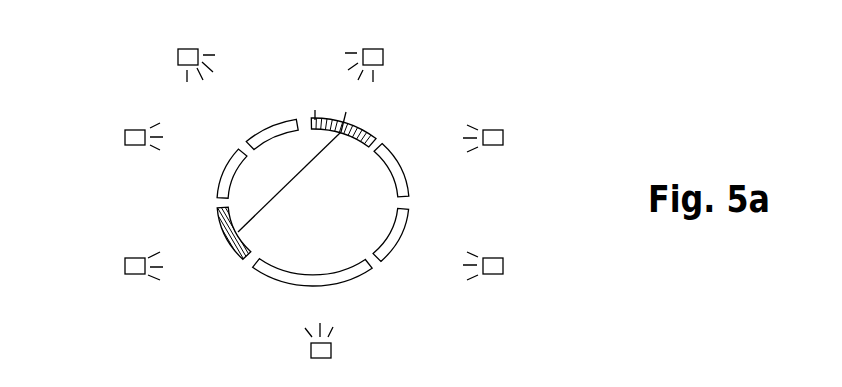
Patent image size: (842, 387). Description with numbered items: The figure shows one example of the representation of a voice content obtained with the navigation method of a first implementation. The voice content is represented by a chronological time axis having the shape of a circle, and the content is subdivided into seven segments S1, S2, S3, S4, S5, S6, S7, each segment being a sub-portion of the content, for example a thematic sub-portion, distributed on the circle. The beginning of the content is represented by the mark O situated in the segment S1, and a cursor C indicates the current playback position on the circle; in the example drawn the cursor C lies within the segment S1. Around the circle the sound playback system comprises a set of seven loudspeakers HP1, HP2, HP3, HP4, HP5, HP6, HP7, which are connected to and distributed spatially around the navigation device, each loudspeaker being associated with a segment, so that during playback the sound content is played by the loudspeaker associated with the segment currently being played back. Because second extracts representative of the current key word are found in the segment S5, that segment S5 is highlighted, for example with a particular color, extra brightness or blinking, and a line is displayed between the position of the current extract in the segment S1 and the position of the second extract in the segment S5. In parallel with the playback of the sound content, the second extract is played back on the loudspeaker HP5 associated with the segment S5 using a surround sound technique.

The segment S1 is at (362, 136).
The segment S2 is at (402, 180).
The segment S3 is at (395, 240).
The segment S4 is at (300, 278).
The segment S5 is at (226, 233).
The segment S6 is at (224, 180).
The segment S7 is at (268, 135).
The loudspeaker HP1 is at (383, 56).
The loudspeaker HP2 is at (503, 137).
The loudspeaker HP3 is at (503, 265).
The loudspeaker HP4 is at (331, 350).
The loudspeaker HP5 is at (133, 267).
The loudspeaker HP6 is at (126, 140).
The loudspeaker HP7 is at (179, 58).
The mark O is at (313, 104).
The cursor C is at (347, 111).